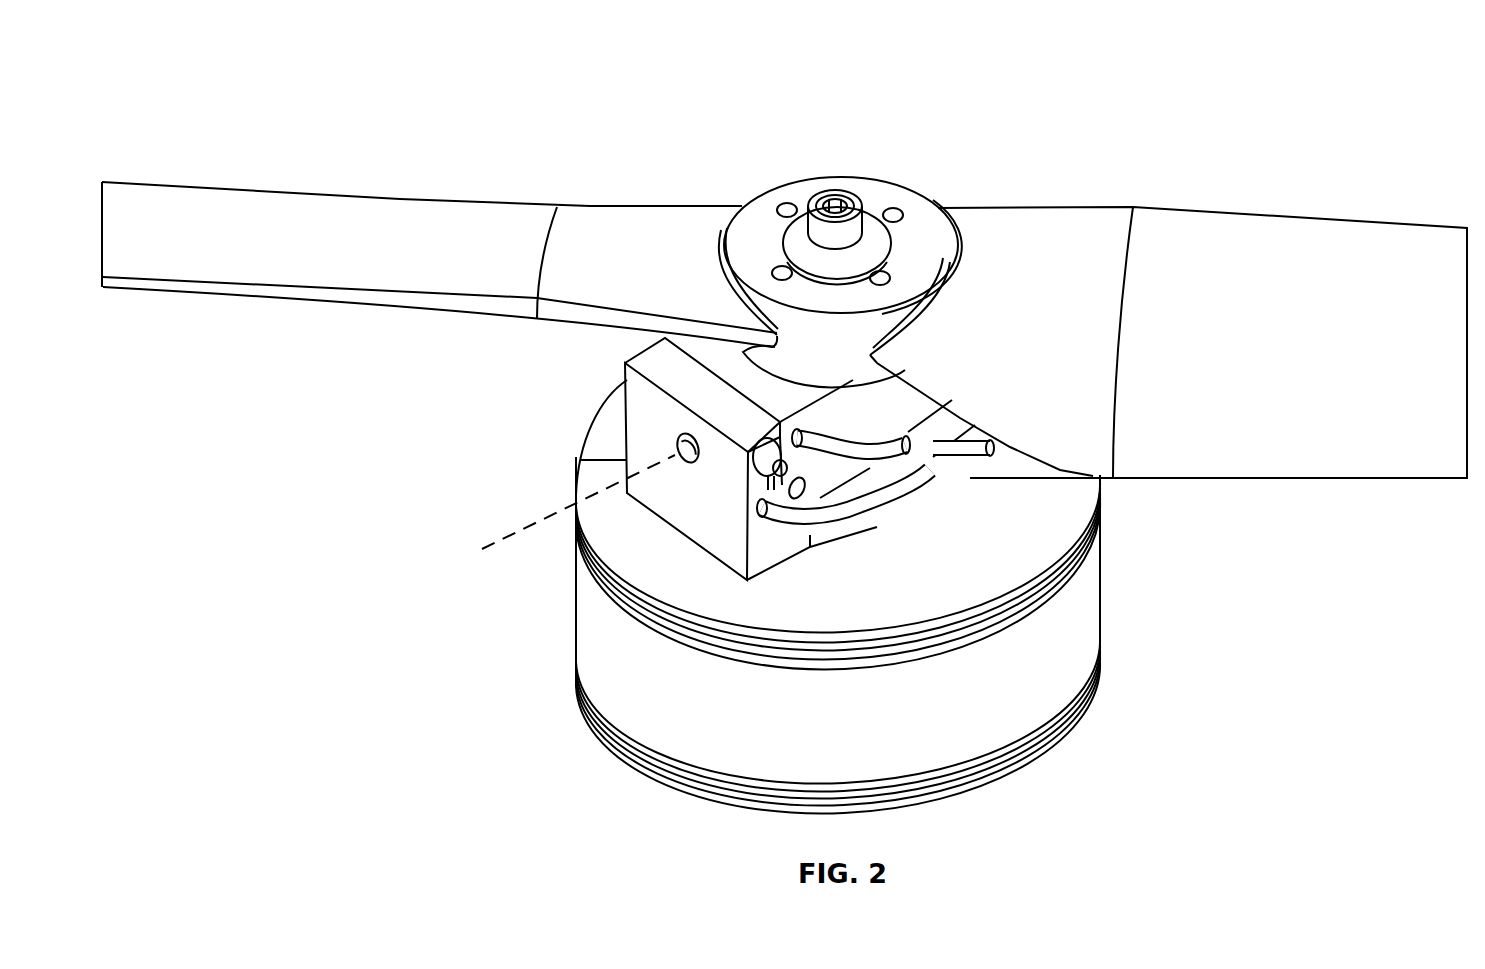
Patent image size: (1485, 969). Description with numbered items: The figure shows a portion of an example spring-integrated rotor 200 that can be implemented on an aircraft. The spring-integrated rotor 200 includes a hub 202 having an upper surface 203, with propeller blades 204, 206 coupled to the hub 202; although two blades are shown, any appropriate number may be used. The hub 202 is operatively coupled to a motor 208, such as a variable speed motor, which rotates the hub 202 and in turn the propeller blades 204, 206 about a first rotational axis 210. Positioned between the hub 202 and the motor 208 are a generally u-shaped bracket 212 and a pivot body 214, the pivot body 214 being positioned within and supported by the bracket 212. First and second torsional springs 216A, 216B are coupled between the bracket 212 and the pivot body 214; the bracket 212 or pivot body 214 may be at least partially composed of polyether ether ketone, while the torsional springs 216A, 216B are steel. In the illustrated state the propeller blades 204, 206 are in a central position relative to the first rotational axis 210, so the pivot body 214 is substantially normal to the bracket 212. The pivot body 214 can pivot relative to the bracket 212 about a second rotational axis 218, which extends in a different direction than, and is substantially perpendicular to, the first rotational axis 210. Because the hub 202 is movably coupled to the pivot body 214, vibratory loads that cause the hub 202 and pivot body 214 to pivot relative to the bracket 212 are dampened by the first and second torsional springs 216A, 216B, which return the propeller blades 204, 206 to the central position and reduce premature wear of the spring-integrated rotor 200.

The spring-integrated rotor 200 is at (1186, 122).
The hub 202 is at (855, 177).
The upper surface 203 is at (942, 200).
The propeller blade 204 is at (1303, 215).
The propeller blade 206 is at (295, 193).
The motor 208 is at (1037, 755).
The first rotational axis 210 is at (836, 63).
The bracket 212 is at (627, 438).
The pivot body 214 is at (663, 375).
The first torsional spring 216A is at (878, 507).
The second torsional spring 216B is at (930, 447).
The second rotational axis 218 is at (545, 518).